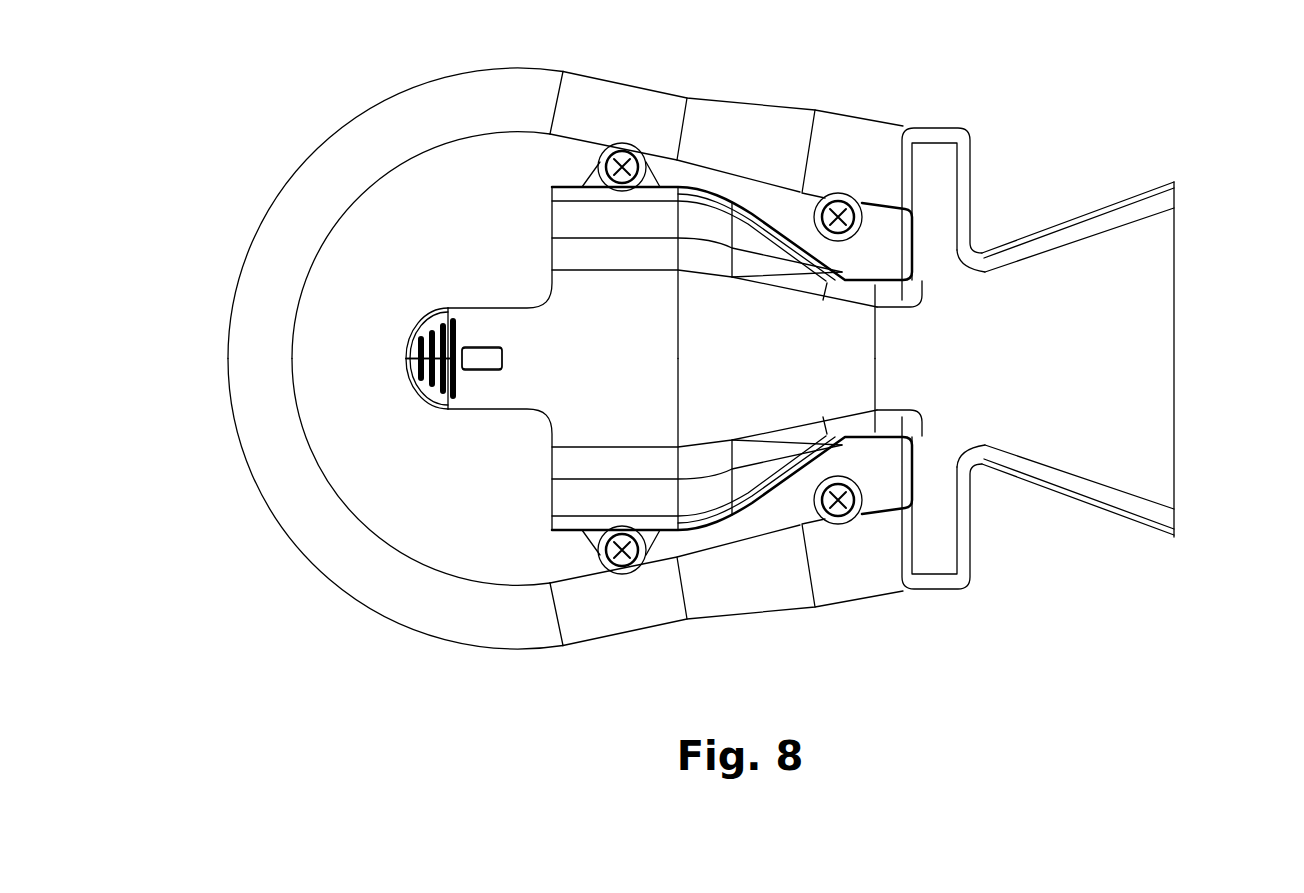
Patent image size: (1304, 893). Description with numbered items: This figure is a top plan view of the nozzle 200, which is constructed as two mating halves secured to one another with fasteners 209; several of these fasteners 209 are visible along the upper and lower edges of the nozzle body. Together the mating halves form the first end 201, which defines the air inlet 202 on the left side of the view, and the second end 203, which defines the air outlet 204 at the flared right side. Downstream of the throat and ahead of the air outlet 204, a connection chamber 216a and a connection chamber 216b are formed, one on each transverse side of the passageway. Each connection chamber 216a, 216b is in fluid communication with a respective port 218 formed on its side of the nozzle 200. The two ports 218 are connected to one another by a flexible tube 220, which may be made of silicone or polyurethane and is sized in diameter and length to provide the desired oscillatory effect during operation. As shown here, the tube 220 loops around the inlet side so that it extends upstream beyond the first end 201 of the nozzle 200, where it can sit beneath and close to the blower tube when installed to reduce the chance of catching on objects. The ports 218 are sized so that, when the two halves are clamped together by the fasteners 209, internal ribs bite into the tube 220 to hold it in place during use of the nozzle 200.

The nozzle 200 is at (977, 142).
The first end 201 is at (552, 522).
The air inlet 202 is at (552, 243).
The second end 203 is at (1176, 178).
The air outlet 204 is at (1177, 427).
The fasteners 209 is at (622, 143).
The connection chamber 216a is at (943, 160).
The connection chamber 216b is at (943, 560).
The port 218 is at (813, 108).
The flexible tube 220 is at (305, 148).